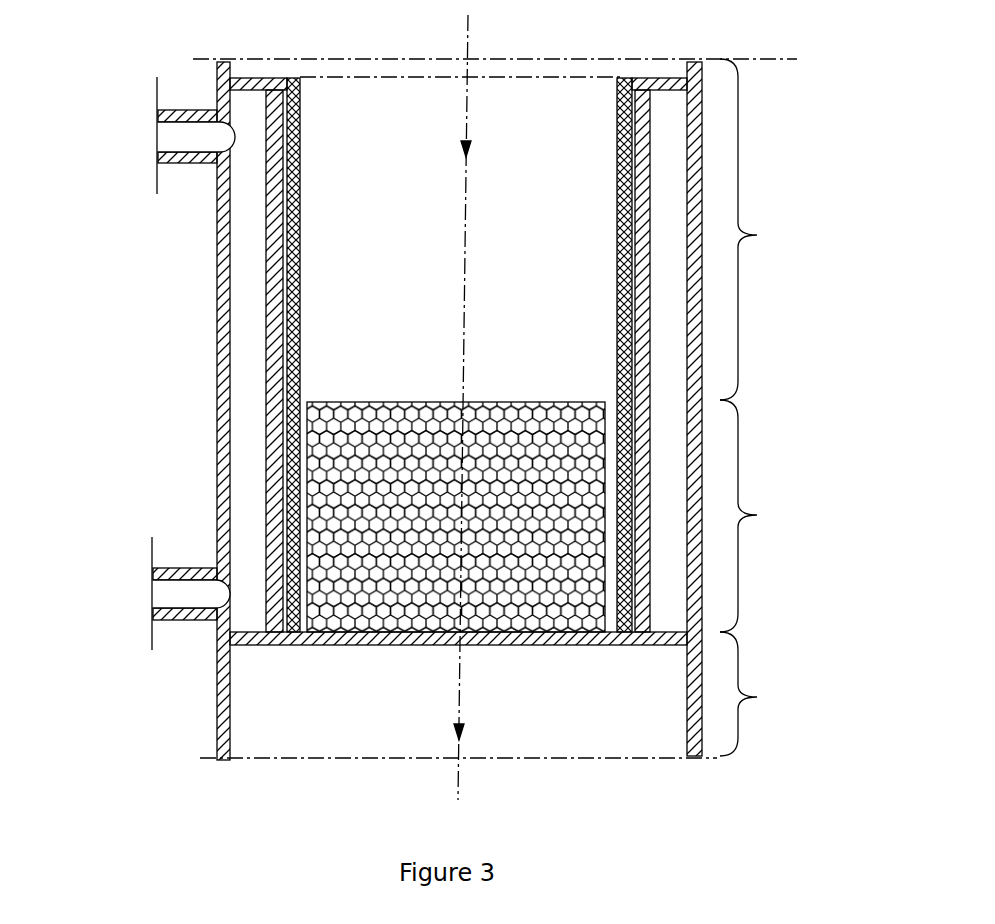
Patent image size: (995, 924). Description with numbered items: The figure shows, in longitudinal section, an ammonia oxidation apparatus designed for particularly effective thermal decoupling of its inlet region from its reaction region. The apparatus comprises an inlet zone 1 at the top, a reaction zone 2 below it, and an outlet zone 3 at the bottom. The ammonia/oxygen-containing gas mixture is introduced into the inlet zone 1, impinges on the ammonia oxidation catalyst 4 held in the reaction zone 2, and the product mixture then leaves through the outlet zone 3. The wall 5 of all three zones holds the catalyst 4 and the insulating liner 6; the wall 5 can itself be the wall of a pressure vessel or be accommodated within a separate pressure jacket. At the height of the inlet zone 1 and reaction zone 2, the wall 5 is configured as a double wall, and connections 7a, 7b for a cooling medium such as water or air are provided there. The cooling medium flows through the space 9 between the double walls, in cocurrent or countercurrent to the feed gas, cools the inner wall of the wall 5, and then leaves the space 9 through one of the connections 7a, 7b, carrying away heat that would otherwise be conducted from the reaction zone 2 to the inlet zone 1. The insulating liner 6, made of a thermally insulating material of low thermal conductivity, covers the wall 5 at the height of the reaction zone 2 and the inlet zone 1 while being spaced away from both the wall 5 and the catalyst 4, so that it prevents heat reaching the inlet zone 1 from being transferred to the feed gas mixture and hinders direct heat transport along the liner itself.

The inlet zone 1 is at (767, 229).
The reaction zone 2 is at (766, 516).
The outlet zone 3 is at (765, 694).
The ammonia oxidation catalyst 4 is at (477, 632).
The wall 5 is at (693, 743).
The insulating liner 6 is at (300, 242).
The connection for a cooling medium 7a is at (267, 594).
The connection for a cooling medium 7b is at (270, 137).
The space between the double walls 9 is at (245, 390).